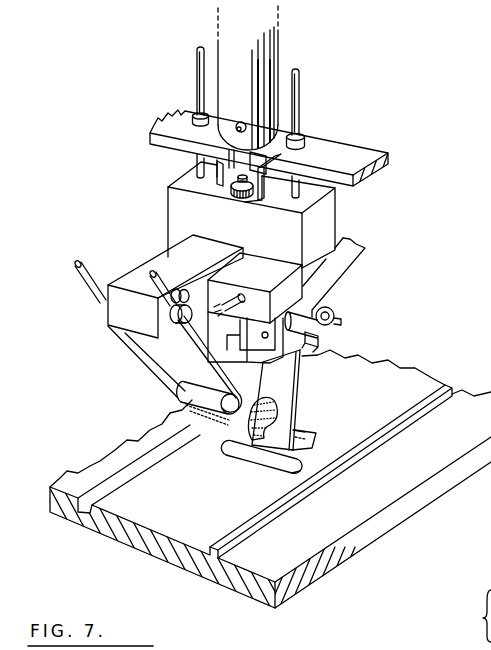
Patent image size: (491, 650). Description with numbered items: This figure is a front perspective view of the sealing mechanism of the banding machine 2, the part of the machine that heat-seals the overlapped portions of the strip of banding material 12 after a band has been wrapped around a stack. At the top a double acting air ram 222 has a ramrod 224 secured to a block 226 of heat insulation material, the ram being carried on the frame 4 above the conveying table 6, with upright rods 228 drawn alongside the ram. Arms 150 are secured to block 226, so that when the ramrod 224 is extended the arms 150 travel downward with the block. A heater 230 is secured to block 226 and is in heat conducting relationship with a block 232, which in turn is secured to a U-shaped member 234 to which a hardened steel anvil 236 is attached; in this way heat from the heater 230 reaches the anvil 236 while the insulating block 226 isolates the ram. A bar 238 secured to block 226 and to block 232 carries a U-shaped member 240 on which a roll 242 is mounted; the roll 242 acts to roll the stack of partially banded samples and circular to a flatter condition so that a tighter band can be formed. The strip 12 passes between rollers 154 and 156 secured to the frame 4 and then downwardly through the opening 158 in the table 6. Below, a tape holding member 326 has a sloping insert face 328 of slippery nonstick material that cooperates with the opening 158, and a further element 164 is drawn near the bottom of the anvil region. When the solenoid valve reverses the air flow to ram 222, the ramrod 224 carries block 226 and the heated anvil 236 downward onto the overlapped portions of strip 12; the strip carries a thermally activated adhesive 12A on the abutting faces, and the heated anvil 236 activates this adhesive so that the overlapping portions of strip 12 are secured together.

The double acting air ram 222 is at (273, 36).
The guide rods 228 is at (197, 62).
The ramrod 224 is at (262, 166).
The frame 4 is at (372, 150).
The block of heat insulation material 226 is at (327, 217).
The arms 150 is at (253, 193).
The bar 238 is at (127, 277).
The U-shaped member 240 is at (92, 288).
The block 232 is at (205, 313).
The roll 242 is at (180, 398).
The U-shaped member 234 is at (277, 330).
The heater 230 is at (327, 272).
The roller 154 is at (330, 307).
The roller 156 is at (310, 342).
The hardened steel anvil 236 is at (295, 373).
The strip of banding material 12 is at (291, 407).
The thermally activated adhesive 12A is at (252, 425).
The tape holding member 326 is at (310, 427).
The opening 158 is at (314, 443).
The rod 164 is at (252, 464).
The sloping insert face 328 is at (300, 473).
The conveying table 6 is at (442, 474).
The banding machine 2 is at (487, 604).